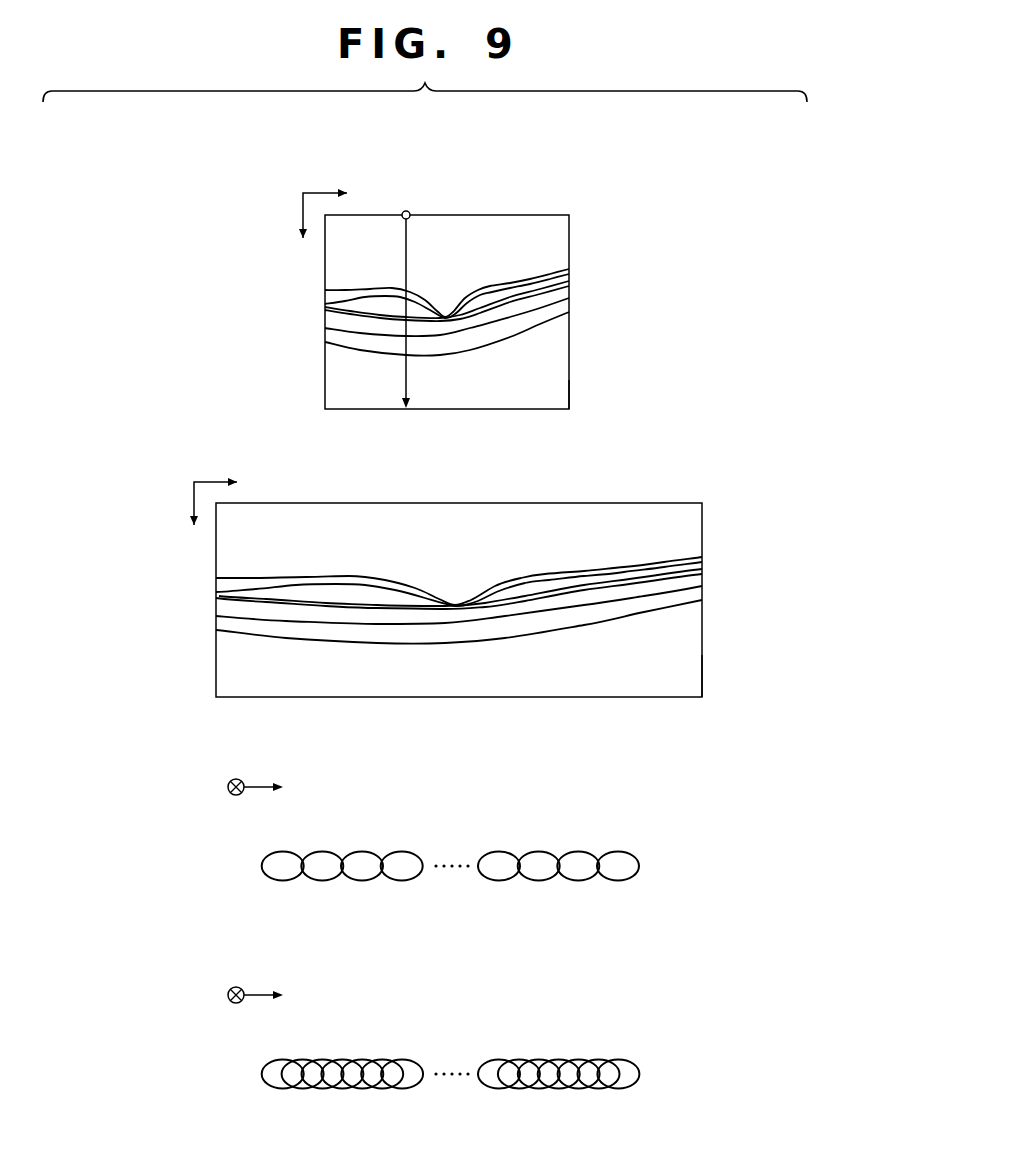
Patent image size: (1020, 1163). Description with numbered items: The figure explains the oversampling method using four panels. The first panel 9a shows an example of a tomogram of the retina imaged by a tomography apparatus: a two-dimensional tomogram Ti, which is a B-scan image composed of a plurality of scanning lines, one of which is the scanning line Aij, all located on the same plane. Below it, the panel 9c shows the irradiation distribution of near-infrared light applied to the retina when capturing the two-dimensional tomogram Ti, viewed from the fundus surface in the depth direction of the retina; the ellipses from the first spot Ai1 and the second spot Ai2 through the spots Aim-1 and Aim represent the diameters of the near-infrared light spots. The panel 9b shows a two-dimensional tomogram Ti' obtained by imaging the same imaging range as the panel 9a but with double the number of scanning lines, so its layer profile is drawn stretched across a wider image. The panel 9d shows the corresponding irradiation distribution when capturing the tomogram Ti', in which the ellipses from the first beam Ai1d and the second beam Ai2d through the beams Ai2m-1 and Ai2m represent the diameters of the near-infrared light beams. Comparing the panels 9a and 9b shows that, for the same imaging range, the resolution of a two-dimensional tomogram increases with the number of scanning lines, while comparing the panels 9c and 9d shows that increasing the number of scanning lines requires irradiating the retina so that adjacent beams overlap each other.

The tomogram of the retina 9a is at (174, 162).
The tomogram with doubled scanning lines 9b is at (174, 432).
The irradiation distribution of near-infrared light 9c is at (174, 762).
The irradiation distribution of near-infrared light for doubled scanning 9d is at (174, 965).
The scanning line Aij is at (406, 211).
The two-dimensional tomogram Ti is at (595, 393).
The two-dimensional tomogram obtained with double the number of scanning lines Ti' is at (730, 672).
The near-infrared light spot Ai1 is at (285, 851).
The near-infrared light spot Ai2 is at (323, 851).
The near-infrared light spot Aim-1 is at (580, 851).
The near-infrared light spot Aim is at (615, 851).
The near-infrared light beam Ai1d is at (292, 1059).
The near-infrared light beam Ai2d is at (303, 1059).
The near-infrared light beam Ai2m-1 is at (600, 1059).
The near-infrared light beam Ai2m is at (615, 1059).